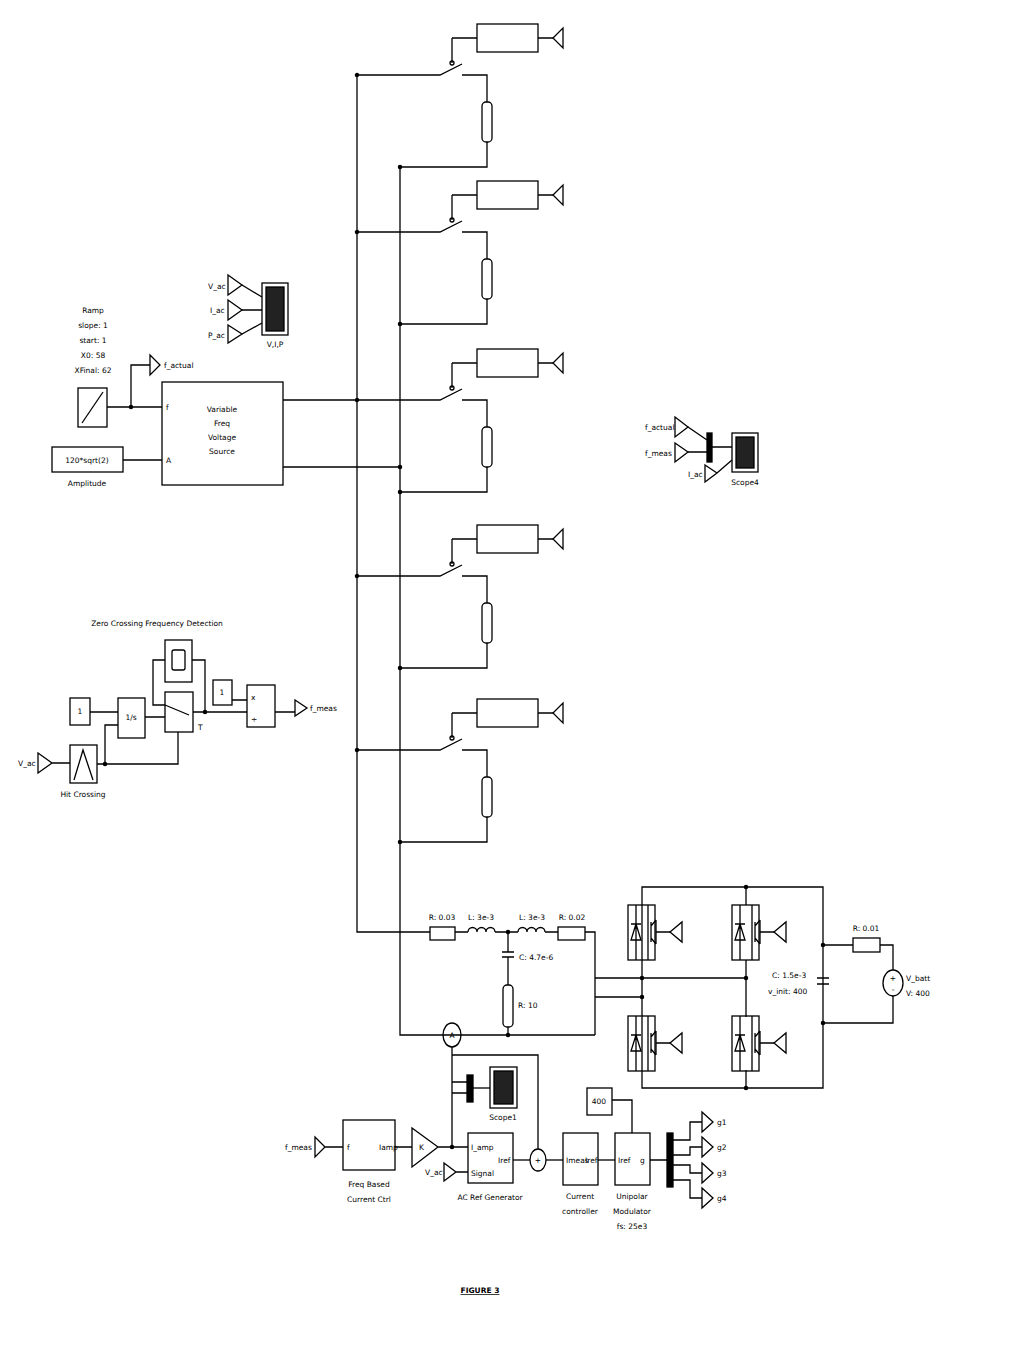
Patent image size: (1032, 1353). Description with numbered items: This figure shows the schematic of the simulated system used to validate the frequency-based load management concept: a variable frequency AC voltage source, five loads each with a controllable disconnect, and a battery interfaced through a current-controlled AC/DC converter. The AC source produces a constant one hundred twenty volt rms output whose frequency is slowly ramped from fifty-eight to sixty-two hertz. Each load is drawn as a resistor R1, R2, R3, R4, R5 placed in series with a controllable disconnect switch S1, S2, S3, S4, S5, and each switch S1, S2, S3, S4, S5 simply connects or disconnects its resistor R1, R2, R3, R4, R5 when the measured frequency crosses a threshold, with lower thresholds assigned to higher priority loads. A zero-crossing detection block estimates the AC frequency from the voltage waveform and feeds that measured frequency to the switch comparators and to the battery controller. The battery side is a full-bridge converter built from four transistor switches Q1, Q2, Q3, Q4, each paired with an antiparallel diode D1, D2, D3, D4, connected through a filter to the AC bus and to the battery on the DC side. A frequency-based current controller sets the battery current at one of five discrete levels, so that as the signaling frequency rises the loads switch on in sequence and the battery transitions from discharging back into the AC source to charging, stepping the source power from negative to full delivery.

The switch 1 S1 is at (474, 63).
The switch 2 S2 is at (474, 220).
The switch 3 S3 is at (474, 388).
The switch 4 S4 is at (474, 564).
The switch 5 S5 is at (474, 738).
The resistor 1 R1 is at (451, 135).
The resistor 2 R2 is at (451, 292).
The resistor 3 R3 is at (451, 460).
The resistor 4 R4 is at (451, 636).
The resistor 5 R5 is at (451, 810).
The IGBT switch Q1 is at (773, 932).
The IGBT switch Q2 is at (773, 1043).
The IGBT switch Q3 is at (669, 932).
The IGBT switch Q4 is at (669, 1043).
The diode D1 is at (715, 932).
The diode D2 is at (715, 1043).
The diode D3 is at (611, 932).
The diode D4 is at (611, 1043).